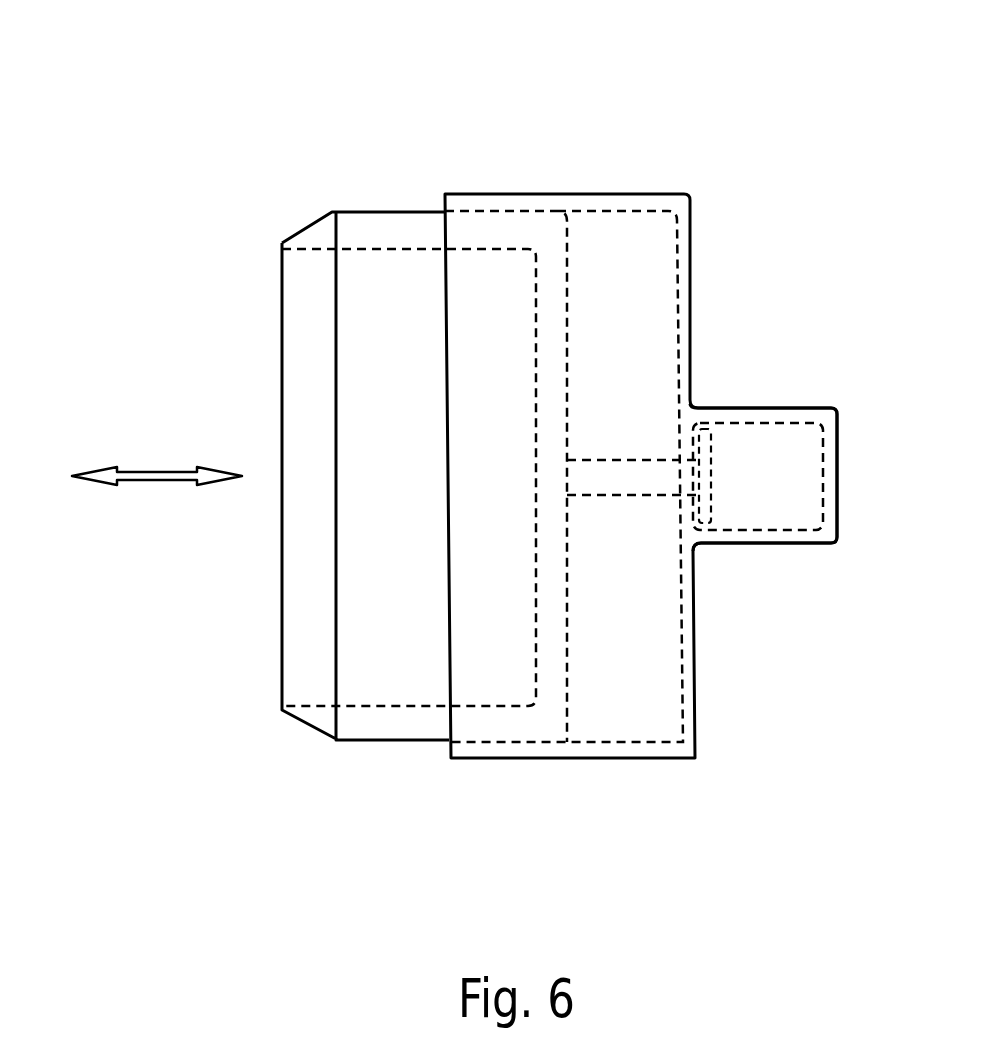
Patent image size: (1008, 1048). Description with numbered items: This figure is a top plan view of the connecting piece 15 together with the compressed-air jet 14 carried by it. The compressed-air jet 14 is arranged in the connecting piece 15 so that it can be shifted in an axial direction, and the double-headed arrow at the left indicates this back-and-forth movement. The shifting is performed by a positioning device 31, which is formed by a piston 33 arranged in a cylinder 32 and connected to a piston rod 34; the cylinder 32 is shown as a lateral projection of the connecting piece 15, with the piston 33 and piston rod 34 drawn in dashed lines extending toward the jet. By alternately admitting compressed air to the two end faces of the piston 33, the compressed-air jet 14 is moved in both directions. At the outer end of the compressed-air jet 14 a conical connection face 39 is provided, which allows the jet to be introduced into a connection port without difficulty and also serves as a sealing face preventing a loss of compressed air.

The conical connection face 39 is at (305, 227).
The compressed-air jet 14 is at (387, 310).
The connecting piece 15 is at (625, 268).
The positioning device 31 is at (792, 383).
The cylinder 32 is at (782, 490).
The piston 33 is at (708, 488).
The piston rod 34 is at (625, 480).